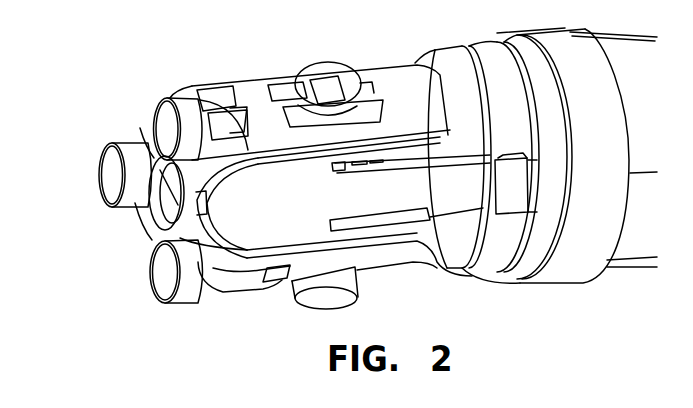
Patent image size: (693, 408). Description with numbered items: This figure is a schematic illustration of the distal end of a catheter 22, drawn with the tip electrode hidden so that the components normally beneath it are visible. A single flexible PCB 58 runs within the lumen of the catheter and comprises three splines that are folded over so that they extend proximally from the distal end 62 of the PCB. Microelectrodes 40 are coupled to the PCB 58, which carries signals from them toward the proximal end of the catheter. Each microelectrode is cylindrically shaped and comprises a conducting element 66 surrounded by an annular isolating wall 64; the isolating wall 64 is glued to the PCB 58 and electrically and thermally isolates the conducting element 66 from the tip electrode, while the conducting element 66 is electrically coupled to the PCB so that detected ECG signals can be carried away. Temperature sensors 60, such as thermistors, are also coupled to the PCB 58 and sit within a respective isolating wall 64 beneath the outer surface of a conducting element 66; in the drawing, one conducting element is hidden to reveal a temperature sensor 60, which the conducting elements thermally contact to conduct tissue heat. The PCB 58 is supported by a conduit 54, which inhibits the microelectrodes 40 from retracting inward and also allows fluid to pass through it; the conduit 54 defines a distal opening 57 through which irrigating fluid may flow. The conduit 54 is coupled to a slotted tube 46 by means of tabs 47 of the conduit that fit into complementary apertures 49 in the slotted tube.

The catheter 22 is at (84, 118).
The microelectrodes 40 is at (108, 180).
The slotted tube 46 is at (510, 103).
The tabs 47 is at (460, 192).
The apertures 49 is at (515, 213).
The conduit 54 is at (268, 226).
The distal opening 57 is at (152, 242).
The flexible PCB 58 is at (392, 80).
The temperature sensors 60 is at (332, 100).
The distal end of PCB 62 is at (143, 133).
The isolating wall 64 is at (197, 280).
The conducting element 66 is at (163, 297).